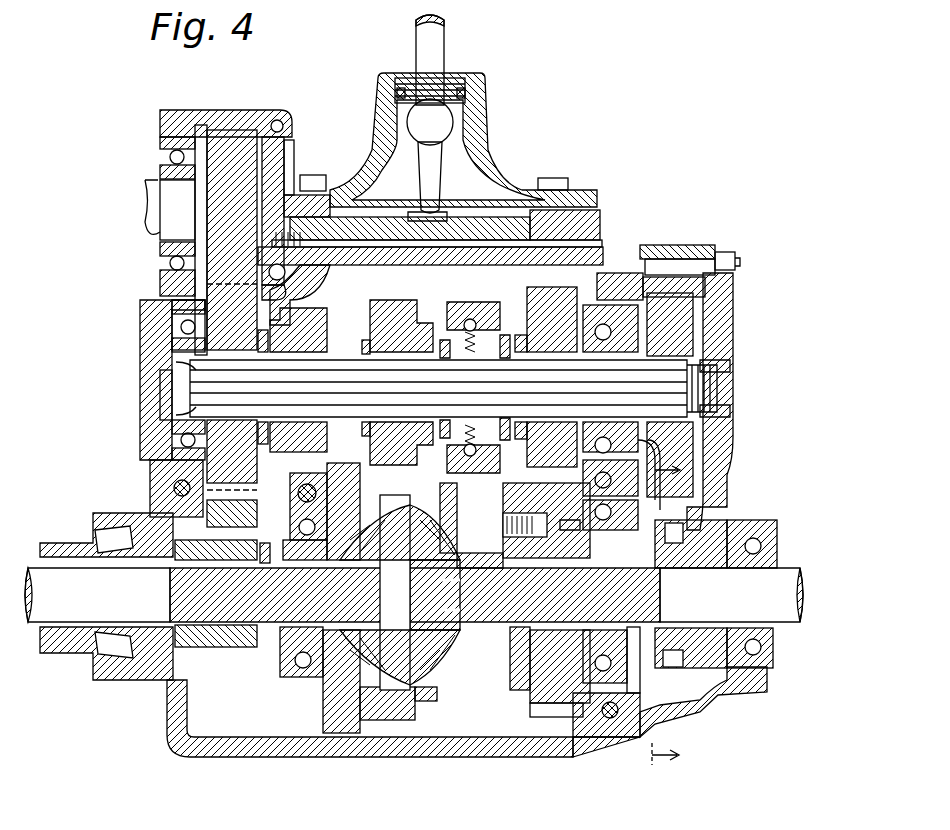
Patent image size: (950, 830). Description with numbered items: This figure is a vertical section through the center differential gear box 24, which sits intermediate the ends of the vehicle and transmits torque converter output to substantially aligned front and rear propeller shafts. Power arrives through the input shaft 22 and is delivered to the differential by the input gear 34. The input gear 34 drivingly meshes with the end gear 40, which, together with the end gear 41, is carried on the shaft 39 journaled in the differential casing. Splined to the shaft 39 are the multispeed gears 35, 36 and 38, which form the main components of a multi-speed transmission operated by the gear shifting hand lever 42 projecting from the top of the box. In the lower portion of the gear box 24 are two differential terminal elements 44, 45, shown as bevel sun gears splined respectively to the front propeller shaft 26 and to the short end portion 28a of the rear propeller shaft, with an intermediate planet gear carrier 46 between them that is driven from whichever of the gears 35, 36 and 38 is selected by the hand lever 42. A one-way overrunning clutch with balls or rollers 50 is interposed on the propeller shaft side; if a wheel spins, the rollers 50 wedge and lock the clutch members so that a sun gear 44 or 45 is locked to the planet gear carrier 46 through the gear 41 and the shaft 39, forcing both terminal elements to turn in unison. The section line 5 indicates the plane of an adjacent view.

The gear shifting hand lever 42 is at (440, 42).
The differential gear box 24 is at (322, 112).
The input gear 34 is at (230, 140).
The input shaft 22 is at (175, 195).
The end gear 40 is at (215, 312).
The shaft 39 is at (195, 385).
The multispeed gear 35 is at (305, 320).
The multispeed gear 36 is at (393, 318).
The multispeed gear 38 is at (535, 310).
The end gear 41 is at (680, 320).
The rollers 50 is at (677, 522).
The front propeller shaft 26 is at (50, 630).
The end portion of rear propeller shaft 28a is at (785, 630).
The differential terminal element 44 is at (312, 685).
The differential terminal element 45 is at (470, 650).
The planet gear carrier 46 is at (445, 682).
The section line 5- 5 is at (666, 616).